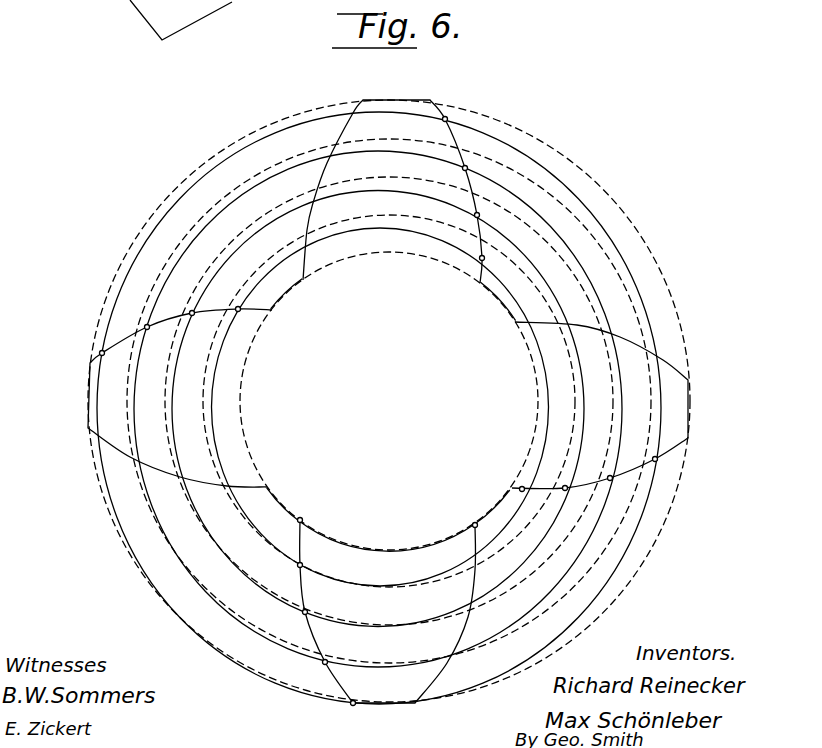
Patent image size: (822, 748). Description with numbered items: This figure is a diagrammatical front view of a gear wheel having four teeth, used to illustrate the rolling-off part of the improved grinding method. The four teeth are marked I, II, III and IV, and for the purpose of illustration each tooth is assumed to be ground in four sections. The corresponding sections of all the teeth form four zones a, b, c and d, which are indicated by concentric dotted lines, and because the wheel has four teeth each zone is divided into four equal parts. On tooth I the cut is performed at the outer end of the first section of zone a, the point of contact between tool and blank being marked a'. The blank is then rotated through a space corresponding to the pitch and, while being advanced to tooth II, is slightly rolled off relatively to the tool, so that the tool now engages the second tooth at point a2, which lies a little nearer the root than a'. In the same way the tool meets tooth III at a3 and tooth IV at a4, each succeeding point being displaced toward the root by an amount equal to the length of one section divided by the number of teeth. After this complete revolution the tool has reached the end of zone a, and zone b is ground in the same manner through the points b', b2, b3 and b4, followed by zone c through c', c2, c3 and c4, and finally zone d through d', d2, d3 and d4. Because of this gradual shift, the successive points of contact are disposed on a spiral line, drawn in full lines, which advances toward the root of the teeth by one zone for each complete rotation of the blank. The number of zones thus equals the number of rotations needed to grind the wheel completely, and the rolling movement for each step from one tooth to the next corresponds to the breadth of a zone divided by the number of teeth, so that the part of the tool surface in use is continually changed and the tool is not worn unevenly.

The zone a is at (389, 414).
The zone b is at (389, 413).
The zone c is at (389, 417).
The zone d is at (389, 412).
The first tooth I is at (388, 611).
The second tooth II is at (180, 398).
The third tooth III is at (392, 194).
The fourth tooth IV is at (589, 405).
The point of contact a' is at (341, 715).
The point of contact b' is at (315, 666).
The point of contact c' is at (295, 623).
The point of contact d' is at (287, 577).
The point of contact a2 is at (112, 343).
The point of contact b2 is at (159, 317).
The point of contact c2 is at (205, 303).
The point of contact d2 is at (253, 301).
The point of contact a3 is at (453, 113).
The point of contact b3 is at (477, 161).
The point of contact c3 is at (488, 209).
The point of contact d3 is at (495, 254).
The point of contact a4 is at (667, 467).
The point of contact b4 is at (616, 486).
The point of contact c4 is at (571, 497).
The point of contact d4 is at (529, 501).